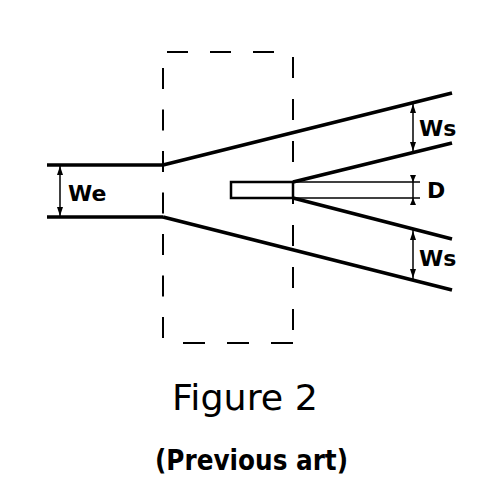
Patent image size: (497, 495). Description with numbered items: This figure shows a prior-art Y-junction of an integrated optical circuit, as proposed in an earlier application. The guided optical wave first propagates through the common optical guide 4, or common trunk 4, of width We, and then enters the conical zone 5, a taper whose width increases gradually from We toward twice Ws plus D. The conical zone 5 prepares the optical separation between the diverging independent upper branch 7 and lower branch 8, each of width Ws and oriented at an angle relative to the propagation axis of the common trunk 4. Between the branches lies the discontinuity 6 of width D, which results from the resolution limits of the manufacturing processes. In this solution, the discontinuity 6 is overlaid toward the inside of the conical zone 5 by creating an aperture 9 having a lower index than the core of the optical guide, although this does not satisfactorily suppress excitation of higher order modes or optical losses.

The common optical guide 4 is at (113, 198).
The conical zone 5 is at (202, 267).
The discontinuity 6 is at (231, 184).
The upper branch 7 is at (312, 148).
The lower branch 8 is at (313, 232).
The aperture 9 is at (253, 187).